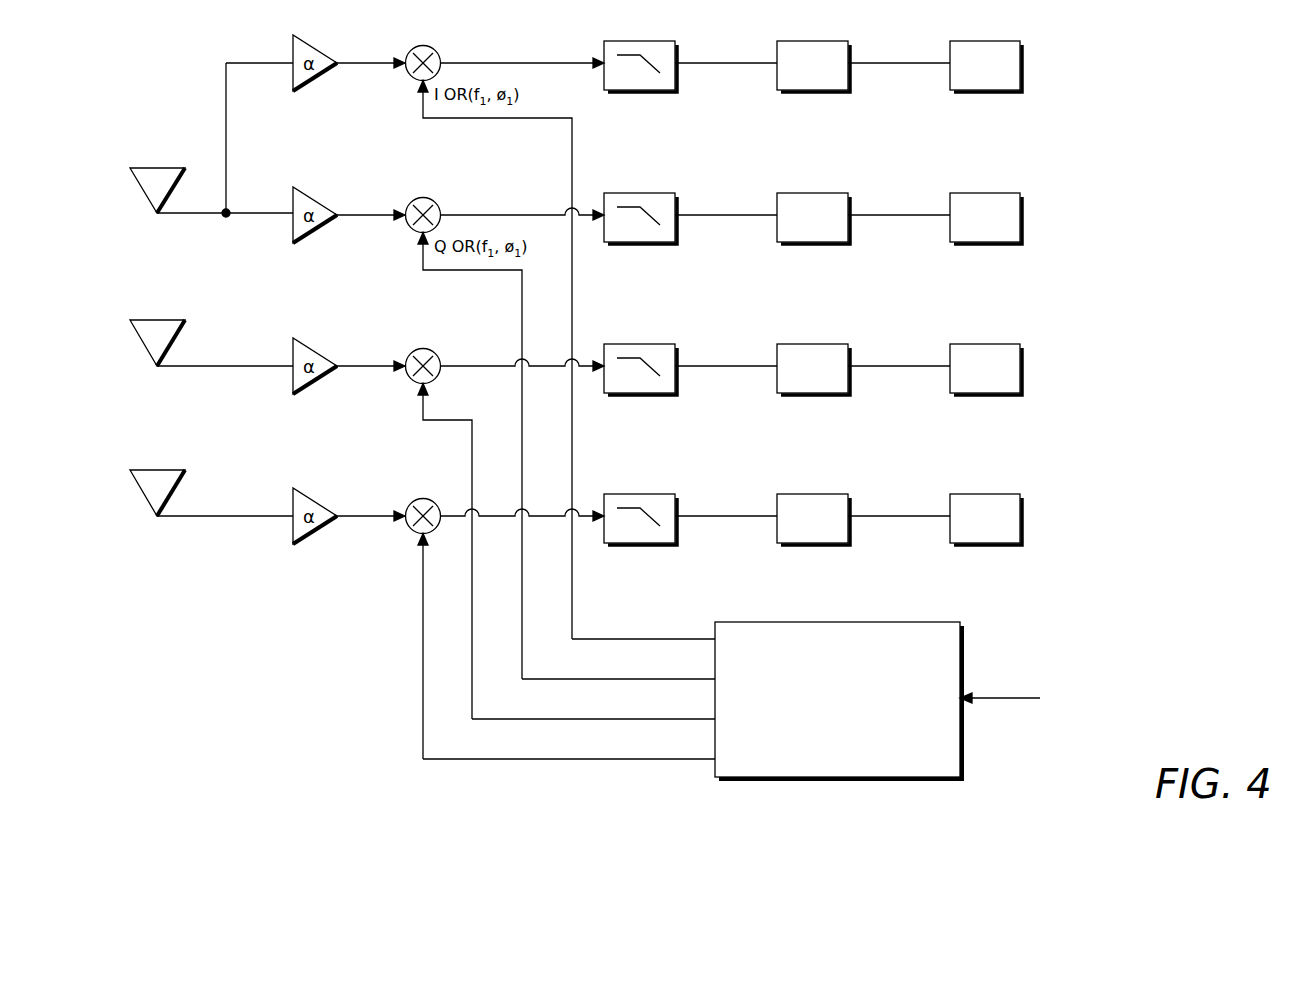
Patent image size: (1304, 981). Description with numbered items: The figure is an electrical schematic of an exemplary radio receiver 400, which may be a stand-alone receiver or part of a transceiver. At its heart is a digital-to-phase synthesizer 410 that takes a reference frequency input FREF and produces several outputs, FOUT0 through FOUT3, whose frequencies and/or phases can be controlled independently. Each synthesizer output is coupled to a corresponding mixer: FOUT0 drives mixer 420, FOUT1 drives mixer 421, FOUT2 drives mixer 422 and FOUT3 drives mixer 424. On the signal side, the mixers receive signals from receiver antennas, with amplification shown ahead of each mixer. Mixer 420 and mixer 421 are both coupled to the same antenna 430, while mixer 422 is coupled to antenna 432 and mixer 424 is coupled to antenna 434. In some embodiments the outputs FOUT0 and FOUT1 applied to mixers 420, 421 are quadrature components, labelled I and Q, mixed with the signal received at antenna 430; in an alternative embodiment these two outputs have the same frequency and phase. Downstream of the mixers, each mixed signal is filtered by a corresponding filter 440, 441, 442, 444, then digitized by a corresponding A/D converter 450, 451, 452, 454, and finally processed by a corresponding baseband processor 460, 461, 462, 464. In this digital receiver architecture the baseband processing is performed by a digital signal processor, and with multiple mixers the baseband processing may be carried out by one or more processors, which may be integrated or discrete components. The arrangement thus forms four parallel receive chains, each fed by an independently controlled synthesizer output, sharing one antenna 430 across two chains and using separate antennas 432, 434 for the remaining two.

The radio receiver 400 is at (1237, 730).
The digital-to-phase synthesizer 410 is at (948, 622).
The mixer 420 is at (423, 197).
The mixer 421 is at (423, 45).
The mixer 422 is at (423, 348).
The mixer 424 is at (423, 498).
The antenna 430 is at (168, 168).
The antenna 432 is at (168, 320).
The antenna 434 is at (168, 470).
The filter 440 is at (663, 193).
The filter 441 is at (663, 41).
The filter 442 is at (663, 344).
The filter 444 is at (663, 494).
The A/D converter 450 is at (836, 193).
The A/D converter 451 is at (836, 41).
The A/D converter 452 is at (836, 344).
The A/D converter 454 is at (836, 494).
The baseband processor 460 is at (1008, 193).
The baseband processor 461 is at (1008, 41).
The baseband processor 462 is at (1008, 344).
The baseband processor 464 is at (1008, 494).